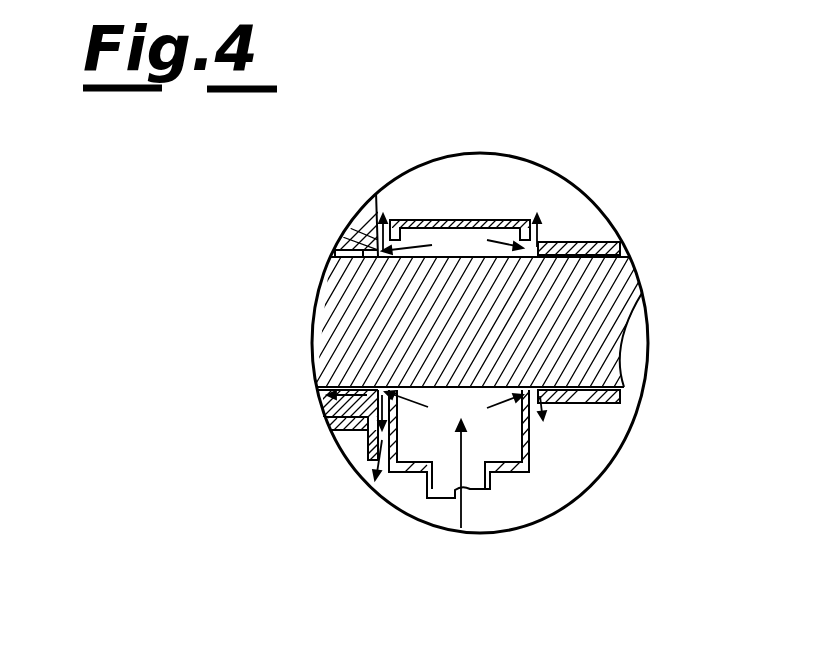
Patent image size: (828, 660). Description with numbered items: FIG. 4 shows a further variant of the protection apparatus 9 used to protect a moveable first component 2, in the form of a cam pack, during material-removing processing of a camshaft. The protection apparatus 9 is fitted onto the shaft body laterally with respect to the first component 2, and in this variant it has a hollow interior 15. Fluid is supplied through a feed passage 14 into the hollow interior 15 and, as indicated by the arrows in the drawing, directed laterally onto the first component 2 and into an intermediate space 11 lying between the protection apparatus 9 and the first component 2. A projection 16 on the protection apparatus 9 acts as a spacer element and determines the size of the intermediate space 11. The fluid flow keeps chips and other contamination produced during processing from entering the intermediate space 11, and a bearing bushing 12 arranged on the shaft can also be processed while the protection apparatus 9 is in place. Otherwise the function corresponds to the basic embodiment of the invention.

The first component 2 is at (332, 217).
The protection apparatus 9 is at (497, 192).
The intermediate space 11 is at (402, 219).
The bearing bushing 12 is at (617, 405).
The supply line 14 is at (493, 488).
The hollow interior 15 is at (530, 440).
The projection 16 is at (373, 447).